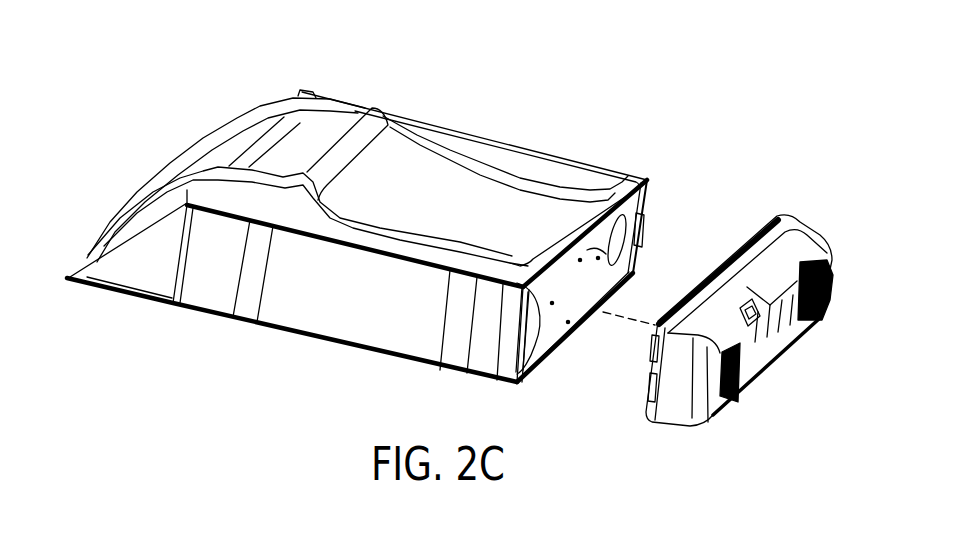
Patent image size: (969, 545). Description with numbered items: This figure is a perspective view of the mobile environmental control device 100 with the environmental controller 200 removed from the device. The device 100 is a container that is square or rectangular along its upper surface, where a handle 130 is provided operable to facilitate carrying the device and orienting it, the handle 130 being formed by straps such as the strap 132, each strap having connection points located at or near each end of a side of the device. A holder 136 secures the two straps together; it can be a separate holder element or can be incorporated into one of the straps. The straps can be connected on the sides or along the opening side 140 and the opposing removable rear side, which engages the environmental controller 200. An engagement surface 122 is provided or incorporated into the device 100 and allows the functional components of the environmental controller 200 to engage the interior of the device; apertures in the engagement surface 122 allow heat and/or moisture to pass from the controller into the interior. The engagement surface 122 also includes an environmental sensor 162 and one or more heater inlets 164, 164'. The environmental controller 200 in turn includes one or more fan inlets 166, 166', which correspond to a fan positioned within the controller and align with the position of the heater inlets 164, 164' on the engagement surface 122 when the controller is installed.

The mobile environmental control device 100 is at (694, 104).
The engagement surface 122 is at (517, 377).
The handle 130 is at (394, 82).
The strap 132 is at (480, 167).
The holder 136 is at (392, 117).
The opening side 140 is at (224, 133).
The environmental sensor 162 is at (587, 250).
The heater inlet 164 is at (658, 219).
The heater inlet 164' is at (465, 346).
The fan inlet 166 is at (838, 294).
The fan inlet 166' is at (760, 379).
The environmental controller 200 is at (820, 243).